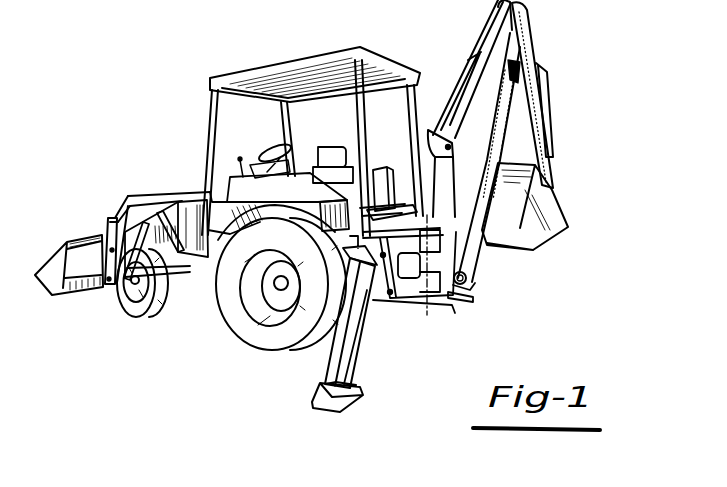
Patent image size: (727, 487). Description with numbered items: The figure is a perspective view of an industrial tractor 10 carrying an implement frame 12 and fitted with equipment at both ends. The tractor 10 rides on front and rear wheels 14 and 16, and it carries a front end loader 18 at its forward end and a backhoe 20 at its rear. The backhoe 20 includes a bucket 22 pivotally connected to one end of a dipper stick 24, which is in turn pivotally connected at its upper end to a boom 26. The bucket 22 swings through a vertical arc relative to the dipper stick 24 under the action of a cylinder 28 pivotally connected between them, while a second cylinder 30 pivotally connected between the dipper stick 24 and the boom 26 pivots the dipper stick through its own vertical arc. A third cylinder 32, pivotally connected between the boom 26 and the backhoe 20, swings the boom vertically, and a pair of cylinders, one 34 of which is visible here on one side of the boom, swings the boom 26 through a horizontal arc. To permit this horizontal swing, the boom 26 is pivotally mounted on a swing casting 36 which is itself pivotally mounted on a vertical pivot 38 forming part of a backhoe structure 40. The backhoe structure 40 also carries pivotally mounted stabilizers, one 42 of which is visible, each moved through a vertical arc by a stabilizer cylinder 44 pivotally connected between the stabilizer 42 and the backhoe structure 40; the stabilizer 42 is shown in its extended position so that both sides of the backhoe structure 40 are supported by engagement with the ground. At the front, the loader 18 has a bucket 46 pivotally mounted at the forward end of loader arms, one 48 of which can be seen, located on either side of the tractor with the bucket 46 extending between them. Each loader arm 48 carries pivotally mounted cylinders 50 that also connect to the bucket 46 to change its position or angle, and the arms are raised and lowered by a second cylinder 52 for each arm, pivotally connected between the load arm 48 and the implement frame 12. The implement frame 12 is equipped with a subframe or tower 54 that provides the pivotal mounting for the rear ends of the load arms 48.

The industrial tractor 10 is at (191, 143).
The implement frame 12 is at (408, 318).
The front wheels 14 is at (142, 317).
The rear wheels 16 is at (246, 330).
The front end loader 18 is at (97, 226).
The backhoe 20 is at (578, 132).
The bucket 22 is at (547, 202).
The dipper stick 24 is at (532, 92).
The boom 26 is at (514, 62).
The cylinder 28 is at (549, 107).
The second cylinder 30 is at (455, 90).
The third cylinder 32 is at (444, 211).
The cylinder 34 is at (412, 300).
The swing casting 36 is at (452, 250).
The vertical pivot 38 is at (430, 316).
The backhoe structure 40 is at (374, 303).
The stabilizer 42 is at (357, 377).
The stabilizer cylinder 44 is at (340, 381).
The bucket 46 is at (50, 283).
The loader arm 48 is at (116, 290).
The cylinders 50 is at (112, 217).
The second cylinder 52 is at (160, 227).
The subframe or tower 54 is at (224, 176).